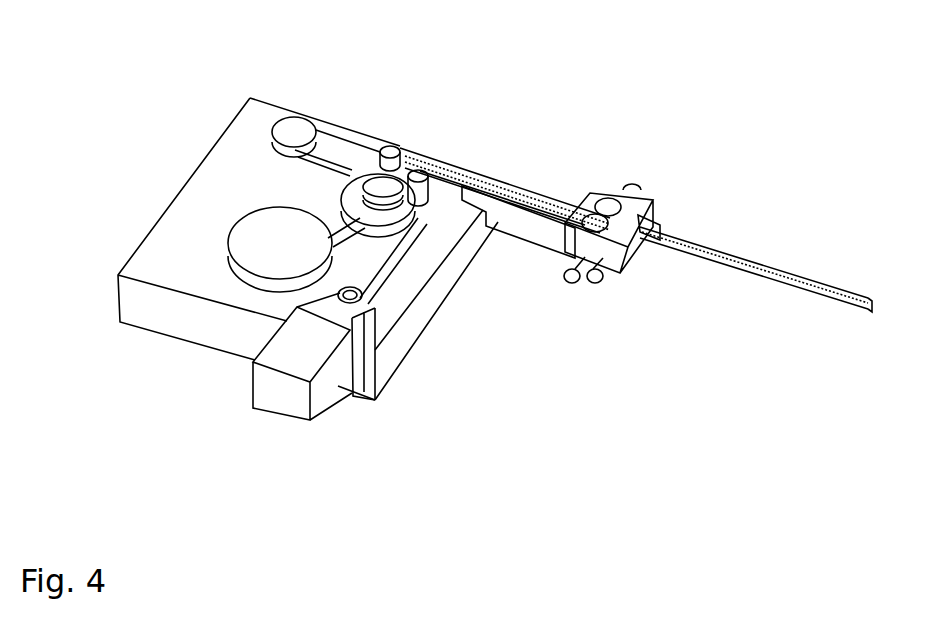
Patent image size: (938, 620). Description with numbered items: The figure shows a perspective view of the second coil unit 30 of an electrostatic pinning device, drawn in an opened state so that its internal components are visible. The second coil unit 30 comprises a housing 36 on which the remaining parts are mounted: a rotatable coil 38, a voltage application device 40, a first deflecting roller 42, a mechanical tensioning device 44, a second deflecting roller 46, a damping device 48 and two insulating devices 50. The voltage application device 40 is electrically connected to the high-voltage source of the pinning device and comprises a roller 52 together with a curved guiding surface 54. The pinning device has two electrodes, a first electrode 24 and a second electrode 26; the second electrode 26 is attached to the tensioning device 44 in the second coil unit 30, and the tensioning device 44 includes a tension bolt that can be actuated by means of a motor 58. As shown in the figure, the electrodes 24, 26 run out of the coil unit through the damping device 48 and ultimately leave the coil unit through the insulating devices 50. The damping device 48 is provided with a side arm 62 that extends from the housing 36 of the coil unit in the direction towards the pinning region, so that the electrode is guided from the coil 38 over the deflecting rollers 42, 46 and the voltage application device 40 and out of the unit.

The second coil unit 30 is at (168, 42).
The housing 36 is at (188, 196).
The rotatable coil 38 is at (250, 255).
The first deflecting roller 42 is at (290, 128).
The first electrode 24 is at (328, 132).
The voltage application device 40 is at (353, 197).
The roller 52 is at (388, 195).
The second deflecting roller 46 is at (388, 153).
The curved guiding surface 54 is at (424, 184).
The second electrode 26 is at (425, 217).
The side arm 62 is at (560, 193).
The damping device 48 is at (640, 153).
The insulating device 50 is at (712, 257).
The mechanical tensioning device 44 is at (390, 311).
The motor 58 is at (325, 398).